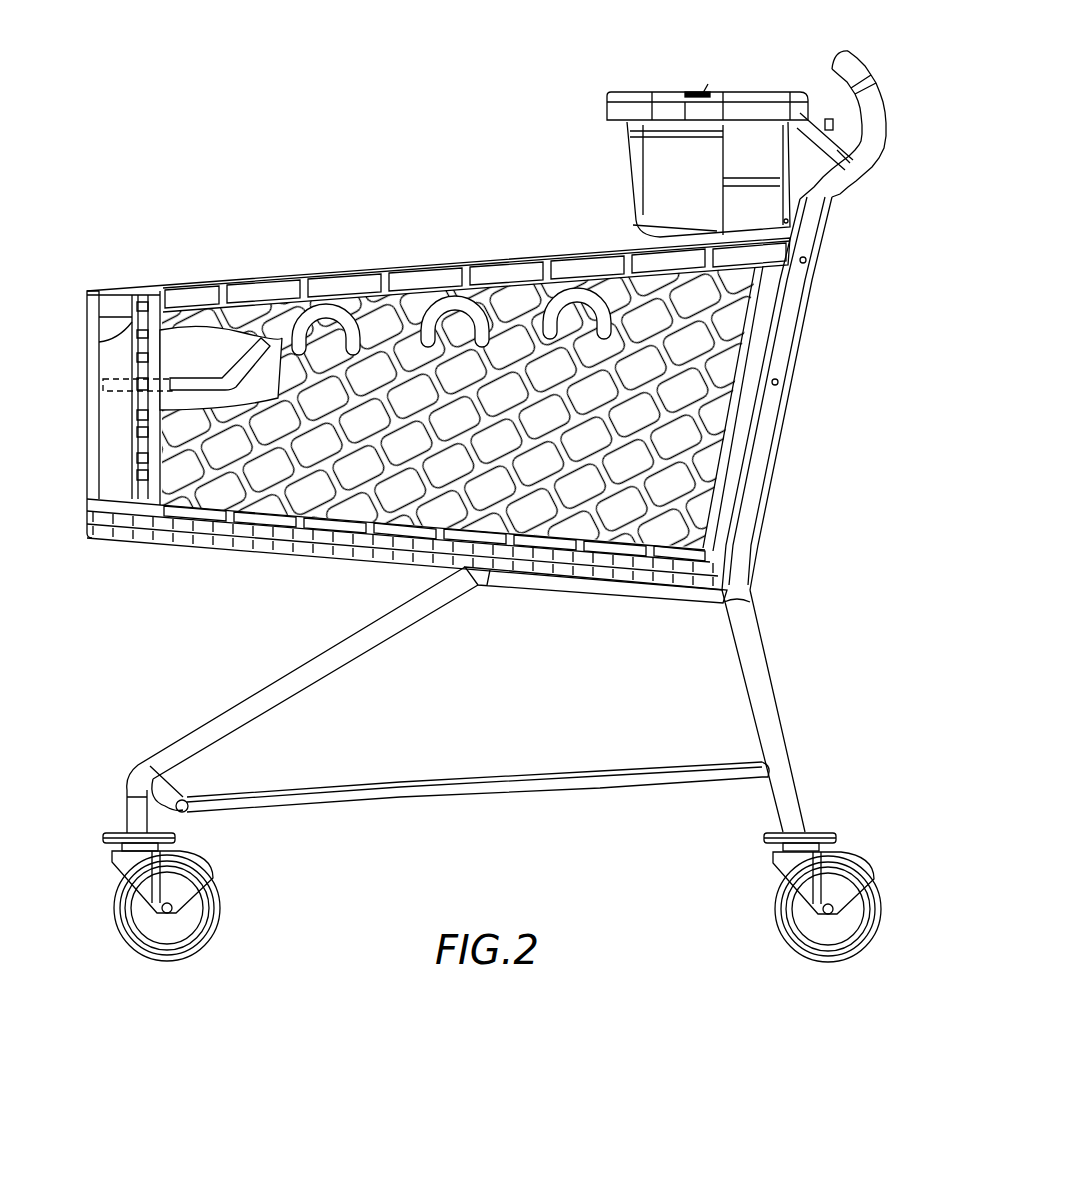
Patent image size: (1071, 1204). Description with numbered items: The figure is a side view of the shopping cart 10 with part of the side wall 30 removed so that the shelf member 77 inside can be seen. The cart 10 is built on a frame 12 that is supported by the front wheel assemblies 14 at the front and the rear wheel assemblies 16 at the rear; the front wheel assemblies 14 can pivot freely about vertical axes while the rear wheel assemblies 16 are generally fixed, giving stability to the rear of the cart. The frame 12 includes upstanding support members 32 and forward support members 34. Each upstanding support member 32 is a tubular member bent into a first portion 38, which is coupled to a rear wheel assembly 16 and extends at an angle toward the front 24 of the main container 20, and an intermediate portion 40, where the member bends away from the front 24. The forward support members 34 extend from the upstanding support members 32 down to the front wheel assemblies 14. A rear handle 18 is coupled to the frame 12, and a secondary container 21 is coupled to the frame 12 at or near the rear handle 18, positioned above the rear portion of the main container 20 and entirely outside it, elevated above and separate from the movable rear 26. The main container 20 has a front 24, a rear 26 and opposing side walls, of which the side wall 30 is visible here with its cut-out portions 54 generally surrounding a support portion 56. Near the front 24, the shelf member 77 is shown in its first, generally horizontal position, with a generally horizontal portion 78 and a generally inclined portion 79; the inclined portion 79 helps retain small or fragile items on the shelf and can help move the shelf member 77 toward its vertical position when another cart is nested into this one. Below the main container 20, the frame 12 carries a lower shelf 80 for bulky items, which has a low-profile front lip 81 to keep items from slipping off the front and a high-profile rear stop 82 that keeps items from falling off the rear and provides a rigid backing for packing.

The shopping cart 10 is at (276, 104).
The frame 12 is at (742, 607).
The front wheel assemblies 14 is at (171, 986).
The rear wheel assemblies 16 is at (808, 984).
The rear handle 18 is at (838, 54).
The main container 20 is at (211, 266).
The secondary container 21 is at (605, 75).
The front 24 is at (87, 310).
The rear 26 is at (789, 418).
The side wall 30 is at (332, 470).
The upstanding support members 32 is at (760, 468).
The forward support members 34 is at (300, 678).
The first portion 38 is at (758, 668).
The intermediate portion 40 is at (796, 306).
The cut-out portions 54 is at (322, 328).
The support portion 56 is at (336, 316).
The shelf member 77 is at (176, 368).
The horizontal portion 78 is at (135, 331).
The inclined portion 79 is at (252, 336).
The lower shelf 80 is at (446, 800).
The front lip 81 is at (138, 778).
The rear stop 82 is at (765, 766).